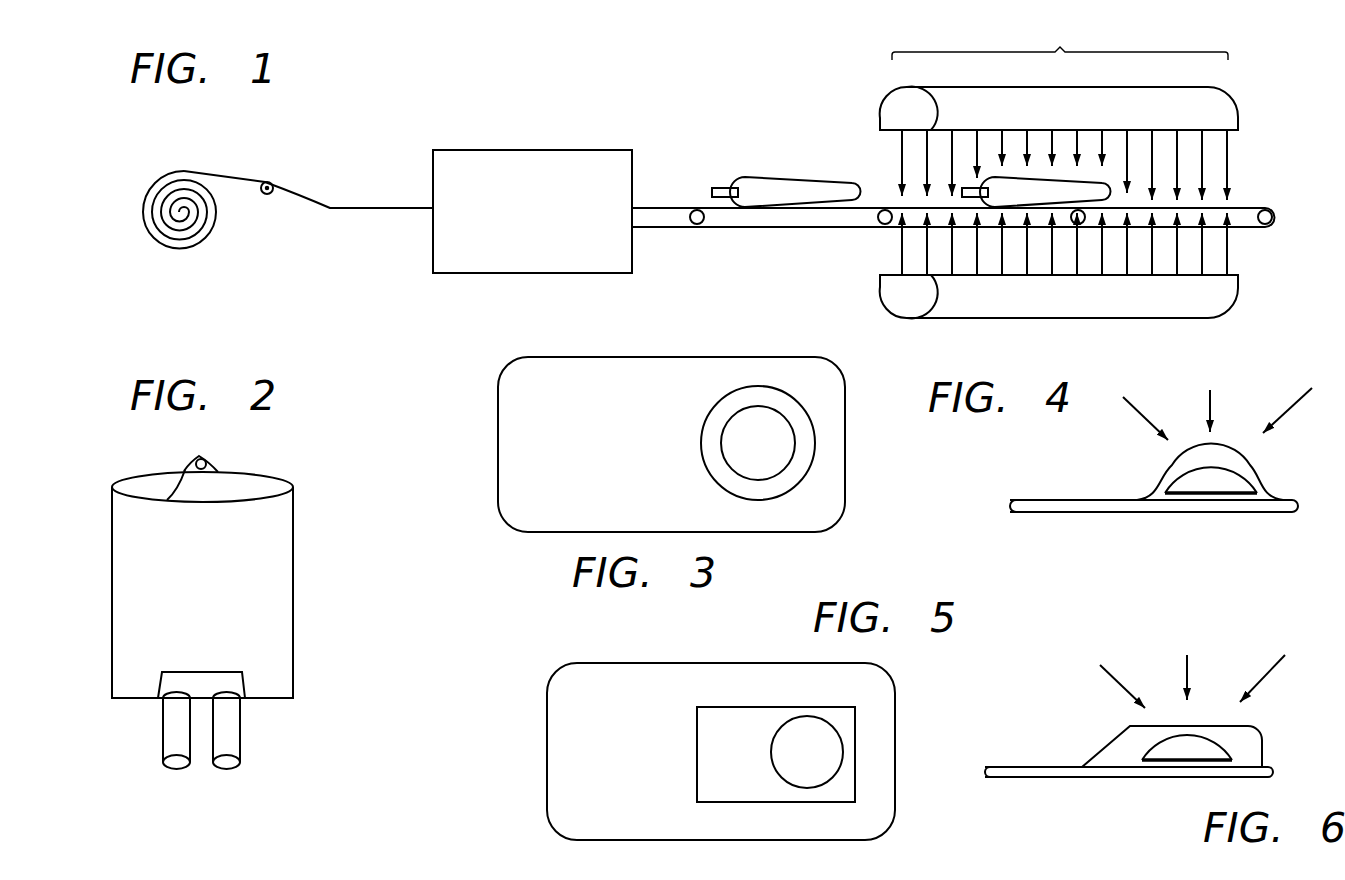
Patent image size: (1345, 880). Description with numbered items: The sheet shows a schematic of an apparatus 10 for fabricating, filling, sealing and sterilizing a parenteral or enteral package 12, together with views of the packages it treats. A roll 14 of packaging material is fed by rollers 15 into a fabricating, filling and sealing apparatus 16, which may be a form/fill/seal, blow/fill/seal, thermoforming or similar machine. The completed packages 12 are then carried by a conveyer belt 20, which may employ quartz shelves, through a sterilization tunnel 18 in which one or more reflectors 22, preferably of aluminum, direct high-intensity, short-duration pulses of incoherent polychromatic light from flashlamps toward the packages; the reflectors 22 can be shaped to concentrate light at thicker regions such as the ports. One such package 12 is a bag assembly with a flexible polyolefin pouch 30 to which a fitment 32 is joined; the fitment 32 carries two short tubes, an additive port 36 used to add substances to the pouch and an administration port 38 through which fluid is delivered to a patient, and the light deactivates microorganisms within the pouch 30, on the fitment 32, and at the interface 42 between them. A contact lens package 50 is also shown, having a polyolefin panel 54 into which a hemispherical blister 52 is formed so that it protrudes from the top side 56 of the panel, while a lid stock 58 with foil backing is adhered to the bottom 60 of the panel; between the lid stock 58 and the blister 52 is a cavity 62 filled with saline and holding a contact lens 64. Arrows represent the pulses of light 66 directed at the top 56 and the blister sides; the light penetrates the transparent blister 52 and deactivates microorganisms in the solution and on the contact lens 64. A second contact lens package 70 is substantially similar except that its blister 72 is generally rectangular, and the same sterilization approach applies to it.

In FIG. 1, the apparatus 10 is at (727, 88).
In FIG. 1, the parenteral or enteral package 12 is at (752, 176).
In FIG. 2, the parenteral or enteral package 12 is at (350, 455).
In FIG. 1, the roll 14 is at (194, 248).
In FIG. 1, the rollers 15 is at (265, 182).
In FIG. 1, the fabricating, filling and sealing apparatus 16 is at (532, 150).
In FIG. 1, the sterilization tunnel 18 is at (1061, 148).
In FIG. 1, the conveyer belt 20 is at (652, 208).
In FIG. 1, the reflectors 22 is at (1236, 105).
In FIG. 2, the flexible pouch 30 is at (217, 598).
In FIG. 2, the fitment 32 is at (147, 710).
In FIG. 2, the additive port 36 is at (163, 742).
In FIG. 2, the administration port 38 is at (240, 739).
In FIG. 2, the interface 42 is at (218, 694).
In FIG. 3, the contact lens package 50 is at (680, 338).
In FIG. 3, the blister 52 is at (712, 408).
In FIG. 4, the blister 52 is at (1165, 466).
In FIG. 3, the polyolefin panel 54 is at (620, 437).
In FIG. 5, the polyolefin panel 54 is at (670, 750).
In FIG. 4, the polyolefin panel 54 is at (1056, 500).
In FIG. 6, the polyolefin panel 54 is at (1034, 767).
In FIG. 4, the top side 56 is at (1030, 497).
In FIG. 6, the top side 56 is at (1007, 763).
In FIG. 4, the lid stock 58 is at (1058, 512).
In FIG. 6, the lid stock 58 is at (1036, 778).
In FIG. 4, the bottom 60 is at (1030, 516).
In FIG. 6, the bottom 60 is at (1007, 781).
In FIG. 3, the cavity 62 is at (713, 435).
In FIG. 5, the cavity 62 is at (742, 765).
In FIG. 4, the cavity 62 is at (1260, 487).
In FIG. 6, the cavity 62 is at (1248, 748).
In FIG. 3, the contact lens 64 is at (772, 453).
In FIG. 5, the contact lens 64 is at (821, 761).
In FIG. 4, the contact lens 64 is at (1211, 481).
In FIG. 6, the contact lens 64 is at (1188, 748).
In FIG. 4, the high-intensity, short-duration pulses of incoherent polychromatic light 66 is at (1214, 403).
In FIG. 6, the high-intensity, short-duration pulses of incoherent polychromatic light 66 is at (1192, 672).
In FIG. 5, the contact lens package 70 is at (710, 640).
In FIG. 5, the rectangular blister 72 is at (768, 707).
In FIG. 6, the rectangular blister 72 is at (1172, 726).